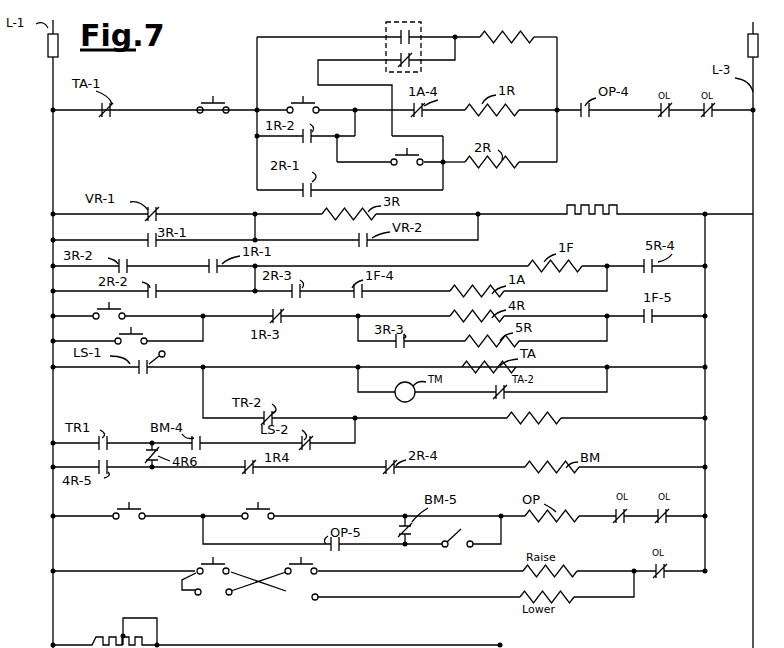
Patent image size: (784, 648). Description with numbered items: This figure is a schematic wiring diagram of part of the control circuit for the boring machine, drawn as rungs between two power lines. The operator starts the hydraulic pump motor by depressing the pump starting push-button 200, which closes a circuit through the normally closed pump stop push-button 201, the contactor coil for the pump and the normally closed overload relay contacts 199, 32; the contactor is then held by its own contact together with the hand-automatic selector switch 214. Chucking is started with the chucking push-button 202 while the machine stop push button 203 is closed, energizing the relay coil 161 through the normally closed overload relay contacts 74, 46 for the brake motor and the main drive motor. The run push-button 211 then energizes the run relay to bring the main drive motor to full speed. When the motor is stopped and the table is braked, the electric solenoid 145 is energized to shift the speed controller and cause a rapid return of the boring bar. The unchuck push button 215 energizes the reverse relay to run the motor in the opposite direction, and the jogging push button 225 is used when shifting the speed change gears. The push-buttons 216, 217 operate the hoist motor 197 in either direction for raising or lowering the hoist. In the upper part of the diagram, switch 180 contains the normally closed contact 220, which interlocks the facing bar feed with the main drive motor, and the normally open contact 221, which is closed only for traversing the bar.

The switch 180 is at (419, 38).
The normally open contact 221 is at (388, 33).
The normally closed contact 220 is at (419, 65).
The relay coil 161 is at (520, 35).
The machine stop push button 203 is at (220, 103).
The chucking push-button 202 is at (306, 104).
The run push-button 211 is at (400, 157).
The overload relay contacts for brake motor 74 is at (674, 110).
The overload relay contacts for main drive motor 46 is at (717, 110).
The unchuck push button 215 is at (127, 308).
The jogging push button 225 is at (135, 334).
The electric solenoid 145 is at (562, 416).
The pump starting push-button 200 is at (264, 506).
The pump stop push-button 201 is at (118, 522).
The hoist push-button 216 is at (200, 565).
The hoist push-button 217 is at (308, 568).
The hand-automatic selector switch 214 is at (465, 537).
The overload relay contacts for lubricating pump motor 199 is at (630, 526).
The overload relay contacts for pump motor 32 is at (672, 526).
The hoist motor 197 is at (674, 574).